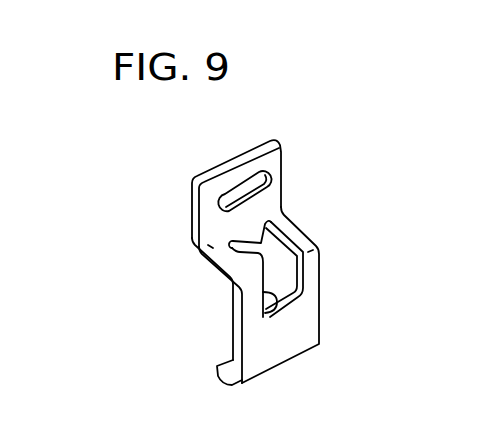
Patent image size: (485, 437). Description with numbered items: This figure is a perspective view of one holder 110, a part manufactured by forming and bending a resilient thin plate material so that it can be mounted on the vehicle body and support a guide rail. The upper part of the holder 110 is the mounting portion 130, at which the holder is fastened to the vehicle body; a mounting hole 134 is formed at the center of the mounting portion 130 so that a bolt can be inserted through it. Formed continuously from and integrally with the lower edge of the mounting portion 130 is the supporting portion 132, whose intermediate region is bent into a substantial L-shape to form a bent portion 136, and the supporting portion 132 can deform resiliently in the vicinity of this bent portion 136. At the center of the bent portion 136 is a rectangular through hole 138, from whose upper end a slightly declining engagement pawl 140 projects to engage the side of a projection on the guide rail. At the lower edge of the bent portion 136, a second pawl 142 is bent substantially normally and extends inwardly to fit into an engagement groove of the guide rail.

The holder 110 is at (97, 210).
The mounting portion 130 is at (197, 221).
The supporting portion 132 is at (216, 333).
The mounting hole 134 is at (233, 188).
The bent portion 136 is at (233, 291).
The through hole 138 is at (276, 313).
The pawl 140 is at (250, 250).
The pawl 142 is at (221, 369).